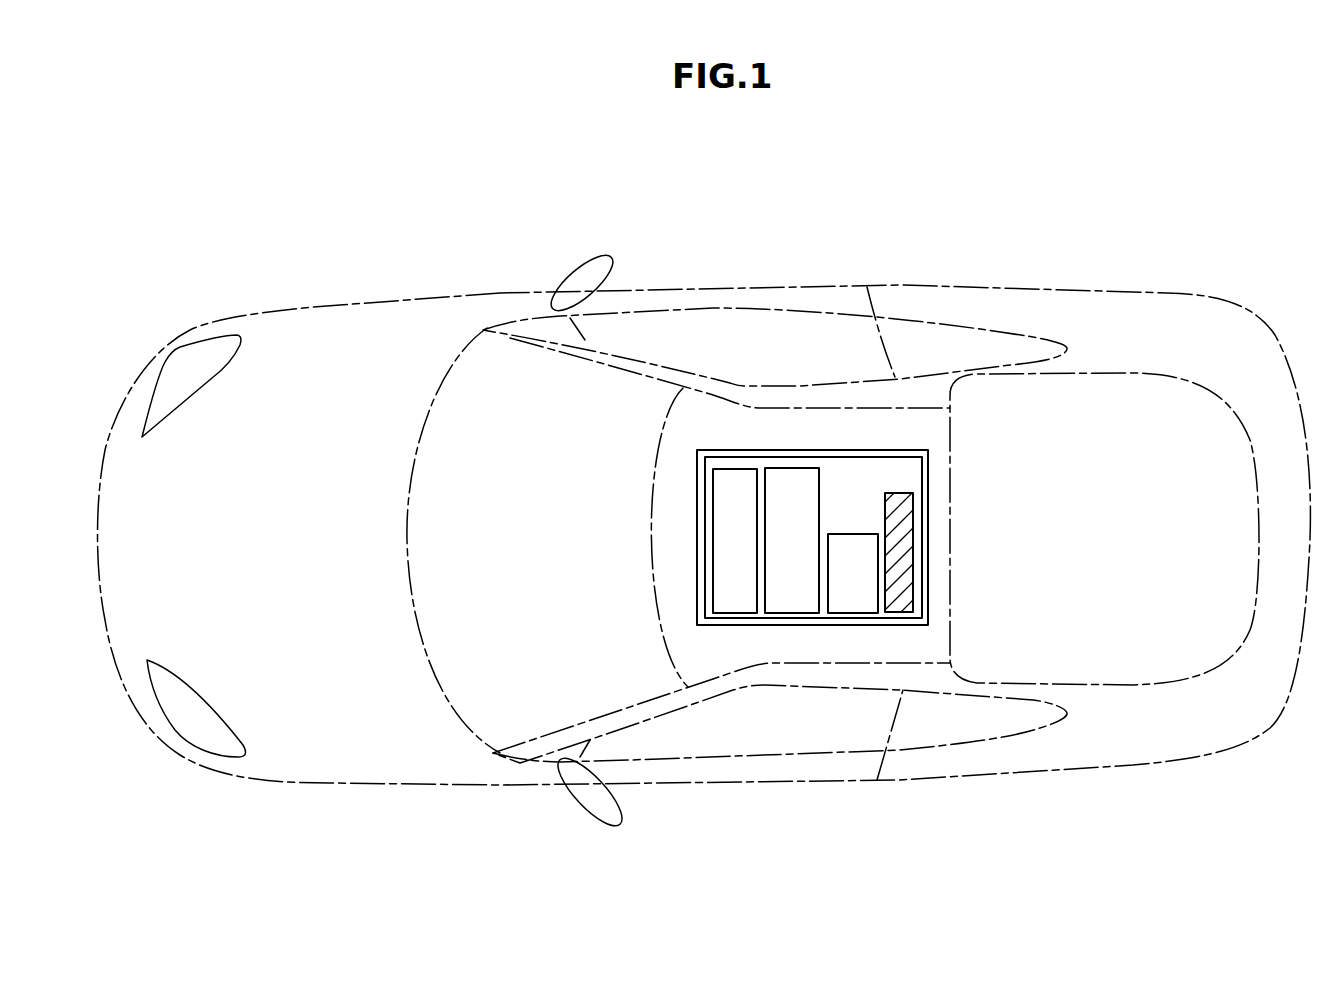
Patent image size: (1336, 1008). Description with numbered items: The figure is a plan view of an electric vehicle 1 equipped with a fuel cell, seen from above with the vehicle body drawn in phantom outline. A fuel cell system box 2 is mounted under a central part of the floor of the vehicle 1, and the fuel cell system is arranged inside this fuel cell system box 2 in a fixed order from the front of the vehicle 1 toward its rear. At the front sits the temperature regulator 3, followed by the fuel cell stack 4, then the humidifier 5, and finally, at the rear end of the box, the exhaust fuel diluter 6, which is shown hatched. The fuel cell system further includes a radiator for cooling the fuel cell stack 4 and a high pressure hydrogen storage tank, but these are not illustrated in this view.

The electric vehicle 1 is at (840, 228).
The fuel cell system box 2 is at (807, 440).
The temperature regulator 3 is at (740, 590).
The fuel cell stack 4 is at (800, 590).
The humidifier 5 is at (857, 590).
The exhaust fuel diluter 6 is at (897, 493).